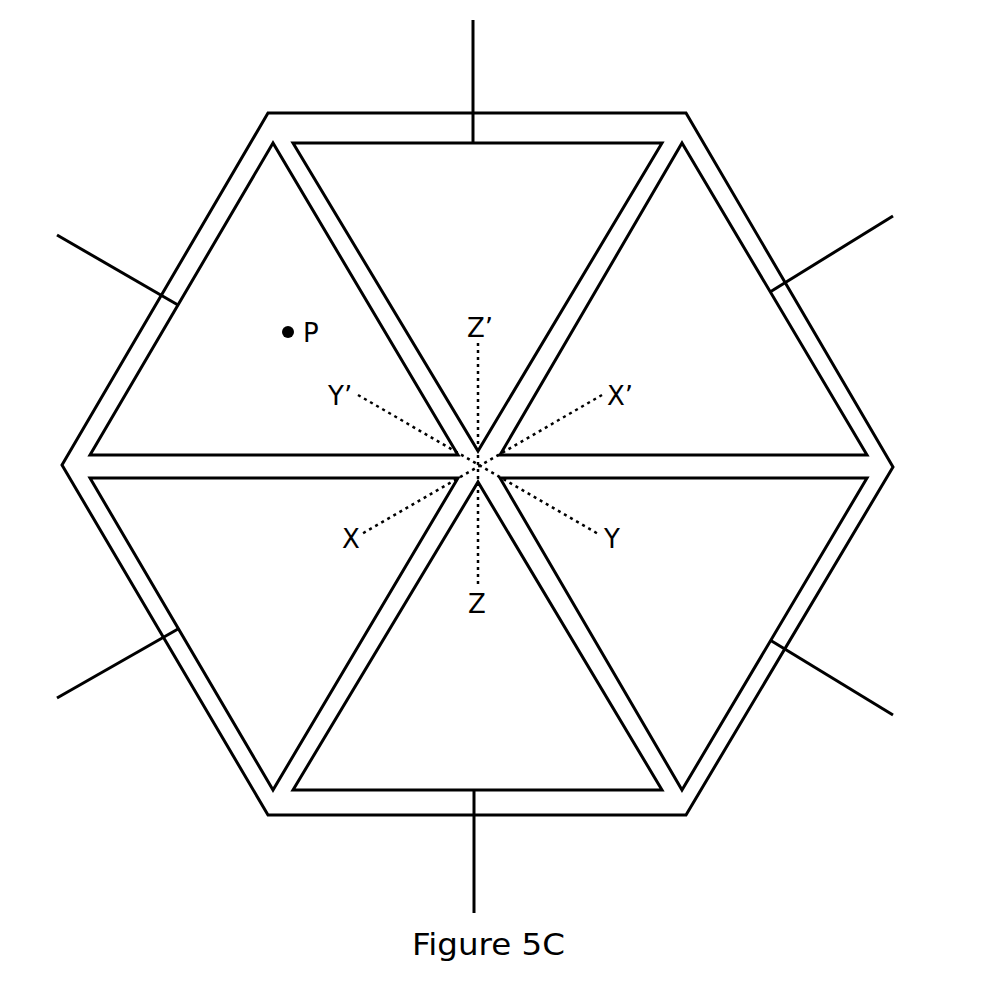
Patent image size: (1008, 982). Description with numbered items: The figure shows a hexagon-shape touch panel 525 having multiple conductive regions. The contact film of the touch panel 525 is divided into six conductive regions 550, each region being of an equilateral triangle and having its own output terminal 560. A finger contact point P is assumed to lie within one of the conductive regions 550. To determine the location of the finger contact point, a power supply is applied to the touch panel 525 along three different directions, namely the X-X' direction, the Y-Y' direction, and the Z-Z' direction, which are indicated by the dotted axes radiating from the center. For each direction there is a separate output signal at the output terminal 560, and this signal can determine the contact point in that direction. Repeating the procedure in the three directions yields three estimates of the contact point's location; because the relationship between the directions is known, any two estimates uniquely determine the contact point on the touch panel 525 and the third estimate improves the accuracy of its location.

The hexagon-shape touch panel 525 is at (293, 112).
The conductive region 550 is at (517, 155).
The output terminal 560 is at (82, 250).